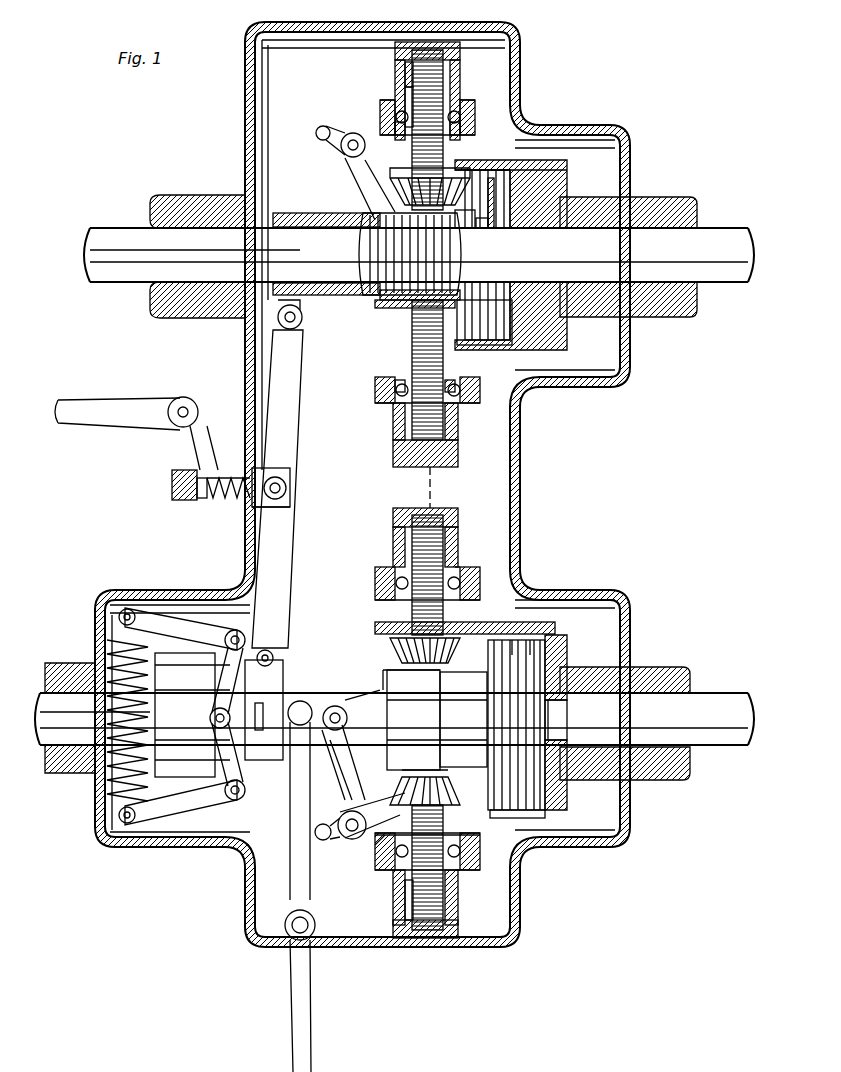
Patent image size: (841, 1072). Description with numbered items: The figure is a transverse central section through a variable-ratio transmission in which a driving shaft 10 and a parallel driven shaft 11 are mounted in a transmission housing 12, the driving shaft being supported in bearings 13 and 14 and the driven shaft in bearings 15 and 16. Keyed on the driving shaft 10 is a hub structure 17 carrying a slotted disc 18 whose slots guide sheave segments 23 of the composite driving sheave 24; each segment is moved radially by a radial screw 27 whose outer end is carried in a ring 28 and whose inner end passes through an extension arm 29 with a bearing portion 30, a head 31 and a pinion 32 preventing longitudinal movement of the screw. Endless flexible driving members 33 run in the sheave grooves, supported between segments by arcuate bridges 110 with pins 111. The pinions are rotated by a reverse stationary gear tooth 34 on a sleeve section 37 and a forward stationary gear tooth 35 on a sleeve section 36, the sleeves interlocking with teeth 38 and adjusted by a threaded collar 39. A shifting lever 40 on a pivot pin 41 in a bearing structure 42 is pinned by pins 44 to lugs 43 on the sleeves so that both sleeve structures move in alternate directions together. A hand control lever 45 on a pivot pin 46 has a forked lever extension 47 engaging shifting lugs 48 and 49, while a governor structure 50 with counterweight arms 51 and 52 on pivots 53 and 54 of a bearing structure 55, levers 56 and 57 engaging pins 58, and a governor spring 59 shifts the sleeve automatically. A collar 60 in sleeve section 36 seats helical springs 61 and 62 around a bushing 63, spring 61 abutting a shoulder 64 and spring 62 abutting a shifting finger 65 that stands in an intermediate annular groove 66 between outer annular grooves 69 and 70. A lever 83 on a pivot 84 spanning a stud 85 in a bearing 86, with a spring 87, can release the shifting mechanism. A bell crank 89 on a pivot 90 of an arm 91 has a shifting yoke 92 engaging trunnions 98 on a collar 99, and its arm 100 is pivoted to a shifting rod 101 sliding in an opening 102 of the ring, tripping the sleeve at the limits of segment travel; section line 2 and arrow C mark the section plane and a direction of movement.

The section line 2 is at (430, 25).
The driving shaft 10 is at (720, 698).
The driven shaft 11 is at (735, 232).
The transmission housing 12 is at (523, 493).
The bearing 13 is at (52, 668).
The bearing 14 is at (652, 675).
The bearing 15 is at (180, 195).
The bearing 16 is at (668, 200).
The hub structure 17 is at (572, 338).
The disc 18 is at (548, 791).
The sheave segment 23 is at (470, 118).
The composite driving sheave 24 is at (370, 870).
The radial screw 27 is at (452, 90).
The ring 28 is at (460, 52).
The extension arm 29 is at (462, 622).
The bearing portion 30 is at (398, 642).
The head 31 is at (437, 510).
The pinion 32 is at (355, 635).
The endless flexible driving member 33 is at (465, 575).
The reverse stationary gear tooth 34 is at (380, 212).
The forward stationary gear tooth 35 is at (368, 660).
The sleeve section 36 is at (472, 310).
The sleeve section 37 is at (375, 300).
The interlocking teeth 38 is at (372, 307).
The threaded collar 39 is at (410, 248).
The shifting lever 40 is at (290, 411).
The pivot pin 41 is at (288, 491).
The bearing structure 42 is at (290, 507).
The lug 43 is at (300, 330).
The pin 44 is at (300, 318).
The hand control lever 45 is at (312, 986).
The pivot pin 46 is at (316, 924).
The forked lever extension 47 is at (306, 776).
The shifting lug 48 is at (265, 703).
The shifting lug 49 is at (343, 733).
The governor structure 50 is at (112, 790).
The centrifugal counterweight arm 51 is at (178, 629).
The centrifugal counterweight arm 52 is at (165, 812).
The pivot 53 is at (240, 632).
The pivot 54 is at (246, 792).
The bearing structure 55 is at (185, 715).
The lever 56 is at (230, 678).
The lever 57 is at (230, 735).
The pin 58 is at (233, 716).
The governor spring 59 is at (215, 768).
The collar 60 is at (545, 195).
The helical spring 61 is at (500, 165).
The helical spring 62 is at (535, 225).
The bushing 63 is at (505, 230).
The shoulder 64 is at (475, 228).
The shifting finger 65 is at (570, 225).
The intermediate annular groove 66 is at (550, 815).
The annular groove 69 is at (555, 805).
The annular groove 70 is at (530, 818).
The lever 83 is at (92, 402).
The pivot 84 is at (185, 400).
The stud 85 is at (172, 490).
The bearing 86 is at (230, 500).
The spring 87 is at (192, 500).
The bell crank 89 is at (345, 184).
The pivot 90 is at (352, 770).
The arm 91 is at (342, 148).
The shifting yoke 92 is at (347, 715).
The trunnion 98 is at (348, 720).
The collar 99 is at (345, 700).
The bell crank arm 100 is at (375, 845).
The shifting rod 101 is at (395, 92).
The opening 102 is at (395, 72).
The bridge 110 is at (382, 118).
The pin 111 is at (380, 390).
The direction arrow C is at (288, 527).